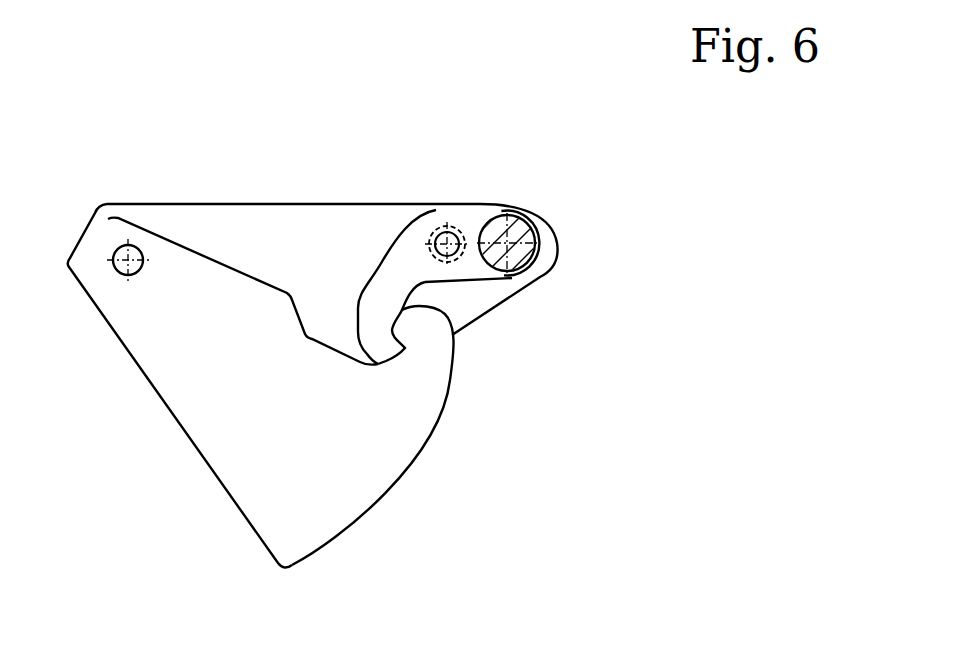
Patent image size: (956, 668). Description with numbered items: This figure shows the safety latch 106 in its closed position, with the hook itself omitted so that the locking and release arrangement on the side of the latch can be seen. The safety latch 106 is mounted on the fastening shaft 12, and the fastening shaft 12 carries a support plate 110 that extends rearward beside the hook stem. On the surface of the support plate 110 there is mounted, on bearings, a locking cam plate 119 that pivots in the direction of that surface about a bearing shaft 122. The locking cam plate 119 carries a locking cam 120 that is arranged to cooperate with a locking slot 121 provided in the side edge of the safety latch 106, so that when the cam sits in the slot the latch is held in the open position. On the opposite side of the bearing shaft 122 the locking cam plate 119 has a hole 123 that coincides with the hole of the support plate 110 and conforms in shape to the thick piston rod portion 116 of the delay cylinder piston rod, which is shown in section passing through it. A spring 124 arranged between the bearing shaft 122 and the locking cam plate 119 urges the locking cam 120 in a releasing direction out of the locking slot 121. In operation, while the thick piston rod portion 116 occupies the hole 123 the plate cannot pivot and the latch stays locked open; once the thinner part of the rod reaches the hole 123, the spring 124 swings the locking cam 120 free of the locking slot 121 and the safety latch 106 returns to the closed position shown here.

The safety latch 106 is at (200, 494).
The support plate 110 is at (240, 223).
The locking cam plate 119 is at (383, 252).
The locking cam 120 is at (372, 322).
The locking slot 121 is at (330, 340).
The bearing shaft 122 is at (437, 227).
The spring 124 is at (460, 228).
The thick piston rod portion 116 is at (527, 224).
The hole 123 is at (517, 276).
The fastening shaft 12 is at (116, 252).